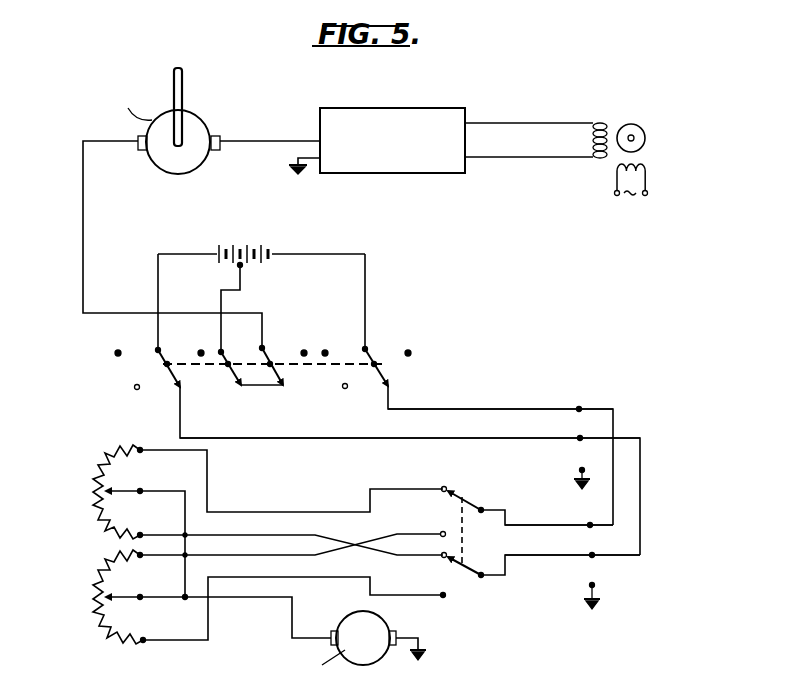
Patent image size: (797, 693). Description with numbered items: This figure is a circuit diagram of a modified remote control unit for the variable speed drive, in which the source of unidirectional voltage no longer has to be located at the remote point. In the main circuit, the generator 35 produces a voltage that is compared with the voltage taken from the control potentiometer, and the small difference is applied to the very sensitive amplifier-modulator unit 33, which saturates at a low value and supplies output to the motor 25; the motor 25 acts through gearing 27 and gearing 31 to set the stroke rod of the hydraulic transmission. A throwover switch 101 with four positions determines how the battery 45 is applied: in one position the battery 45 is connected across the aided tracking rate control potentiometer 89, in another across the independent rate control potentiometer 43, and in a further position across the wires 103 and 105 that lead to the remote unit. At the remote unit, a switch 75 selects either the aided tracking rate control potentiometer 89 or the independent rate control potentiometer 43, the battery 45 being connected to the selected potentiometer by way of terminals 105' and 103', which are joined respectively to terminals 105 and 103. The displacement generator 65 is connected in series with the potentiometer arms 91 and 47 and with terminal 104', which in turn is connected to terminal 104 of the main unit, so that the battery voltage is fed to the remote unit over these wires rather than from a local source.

The generator 35 is at (211, 120).
The amplifier-modulator unit 33 is at (420, 108).
The gearing 31 is at (608, 120).
The motor 25 is at (648, 138).
The gearing 27 is at (646, 185).
The battery 45 is at (250, 252).
The throwover switch 101 is at (285, 363).
The wire 103 is at (508, 389).
The wire 105 is at (423, 421).
The aided tracking rate control potentiometer 89 is at (97, 470).
The potentiometer arm 91 is at (128, 490).
The independent rate control potentiometer 43 is at (101, 594).
The potentiometer arm 47 is at (126, 597).
The switch 75 is at (462, 497).
The terminal 104 is at (559, 470).
The terminal 103' is at (559, 513).
The terminal 105' is at (586, 573).
The terminal 104' is at (562, 592).
The displacement generator 65 is at (395, 617).